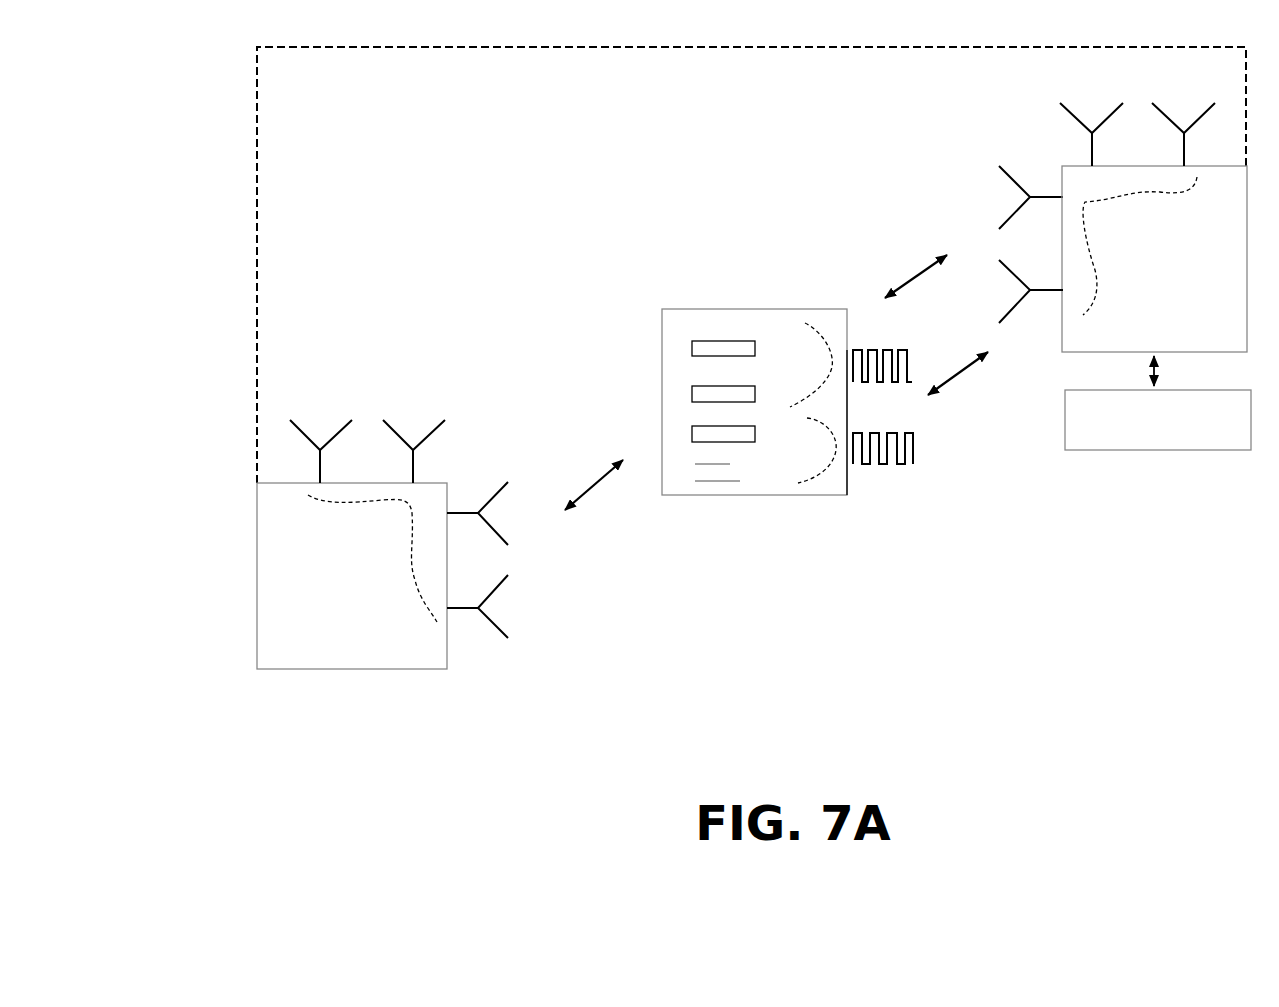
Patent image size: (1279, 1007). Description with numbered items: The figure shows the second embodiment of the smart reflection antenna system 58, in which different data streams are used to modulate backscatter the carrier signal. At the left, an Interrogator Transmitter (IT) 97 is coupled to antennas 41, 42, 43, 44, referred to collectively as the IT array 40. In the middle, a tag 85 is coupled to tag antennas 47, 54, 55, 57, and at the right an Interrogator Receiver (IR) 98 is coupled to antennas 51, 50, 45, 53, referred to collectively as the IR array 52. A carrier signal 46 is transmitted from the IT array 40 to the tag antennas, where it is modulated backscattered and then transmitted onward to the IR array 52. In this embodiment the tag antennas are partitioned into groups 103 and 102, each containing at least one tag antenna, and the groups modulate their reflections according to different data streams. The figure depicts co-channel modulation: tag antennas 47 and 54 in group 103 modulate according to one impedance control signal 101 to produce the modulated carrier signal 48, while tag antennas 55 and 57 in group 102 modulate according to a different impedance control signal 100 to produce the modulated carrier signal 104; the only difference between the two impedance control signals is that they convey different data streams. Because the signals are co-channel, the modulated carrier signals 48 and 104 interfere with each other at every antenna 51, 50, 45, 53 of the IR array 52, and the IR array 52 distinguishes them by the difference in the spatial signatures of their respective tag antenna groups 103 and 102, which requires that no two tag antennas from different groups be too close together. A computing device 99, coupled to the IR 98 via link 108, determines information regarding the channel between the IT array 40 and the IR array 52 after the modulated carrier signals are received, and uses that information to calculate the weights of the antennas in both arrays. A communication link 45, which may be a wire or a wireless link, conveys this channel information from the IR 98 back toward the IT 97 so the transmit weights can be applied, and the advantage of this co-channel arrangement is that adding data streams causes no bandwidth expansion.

The IT array 40 is at (421, 625).
The antenna 41 is at (529, 609).
The antenna 42 is at (512, 502).
The antenna 43 is at (415, 406).
The antenna 44 is at (336, 408).
The communication link 45 is at (257, 247).
The carrier signal 46 is at (607, 495).
The tag antenna 47 is at (747, 333).
The modulated carrier signal 48 is at (916, 260).
The antenna 50 is at (1089, 99).
The antenna 51 is at (1179, 97).
The IR array 52 is at (1139, 205).
The antenna 53 is at (1036, 309).
The tag antenna 54 is at (688, 393).
The tag antenna 55 is at (761, 438).
The tag antenna 57 is at (724, 490).
The smart reflection antenna system 58 is at (765, 724).
The tag 85 is at (681, 335).
The Interrogator Transmitter 97 is at (303, 660).
The Interrogator Receiver 98 is at (1202, 346).
The computing device 99 is at (1189, 458).
The impedance control signal 100 is at (891, 484).
The impedance control signal 101 is at (882, 342).
The tag antenna group 102 is at (844, 482).
The tag antenna group 103 is at (817, 320).
The modulated carrier signal 104 is at (966, 390).
The link 108 is at (1172, 370).